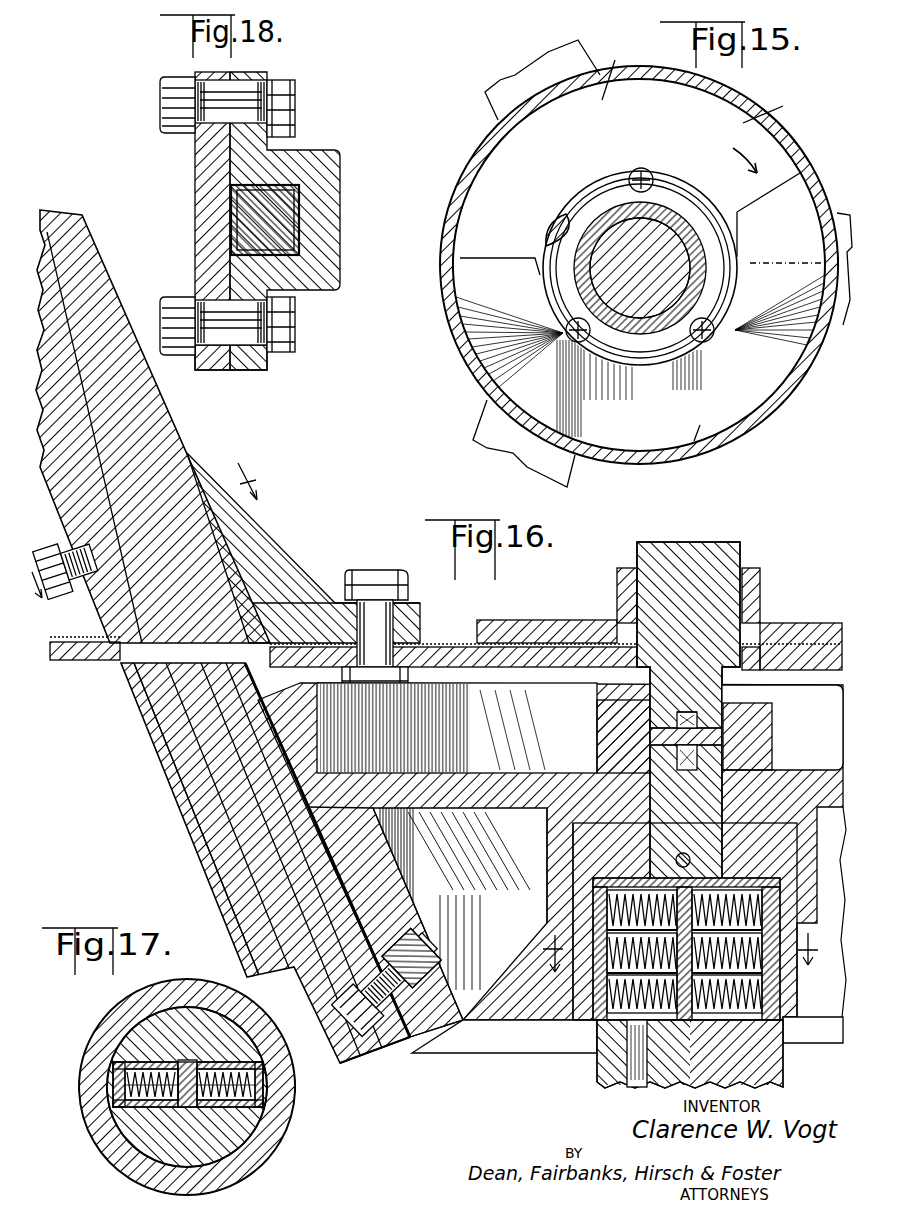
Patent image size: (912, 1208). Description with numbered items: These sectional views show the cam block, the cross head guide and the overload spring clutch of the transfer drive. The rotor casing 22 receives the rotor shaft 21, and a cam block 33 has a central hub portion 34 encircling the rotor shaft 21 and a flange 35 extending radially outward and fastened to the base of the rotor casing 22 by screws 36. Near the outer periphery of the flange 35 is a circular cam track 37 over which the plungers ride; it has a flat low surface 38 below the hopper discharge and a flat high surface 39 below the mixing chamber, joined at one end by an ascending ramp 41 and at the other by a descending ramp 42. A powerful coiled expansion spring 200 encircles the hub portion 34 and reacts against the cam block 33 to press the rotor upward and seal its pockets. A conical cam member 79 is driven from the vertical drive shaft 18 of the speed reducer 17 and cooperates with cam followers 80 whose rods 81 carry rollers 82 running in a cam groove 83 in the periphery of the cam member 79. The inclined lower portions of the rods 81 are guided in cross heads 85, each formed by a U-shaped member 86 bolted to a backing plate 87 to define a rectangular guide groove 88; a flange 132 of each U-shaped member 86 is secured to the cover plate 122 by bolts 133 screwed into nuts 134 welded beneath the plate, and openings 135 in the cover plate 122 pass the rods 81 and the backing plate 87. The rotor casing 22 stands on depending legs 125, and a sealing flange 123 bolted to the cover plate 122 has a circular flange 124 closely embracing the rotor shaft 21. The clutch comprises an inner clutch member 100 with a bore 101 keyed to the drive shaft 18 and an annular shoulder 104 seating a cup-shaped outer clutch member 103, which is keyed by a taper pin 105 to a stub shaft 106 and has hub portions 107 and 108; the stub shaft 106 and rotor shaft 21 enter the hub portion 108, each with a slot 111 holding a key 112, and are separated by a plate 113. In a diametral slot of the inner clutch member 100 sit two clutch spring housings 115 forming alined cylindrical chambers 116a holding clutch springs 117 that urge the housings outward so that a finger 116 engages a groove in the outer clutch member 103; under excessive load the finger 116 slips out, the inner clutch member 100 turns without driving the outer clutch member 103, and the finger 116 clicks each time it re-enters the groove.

In FIG. 16, the speed reducer 17 is at (683, 951).
In FIG. 16, the drive shaft 18 is at (662, 1085).
In FIG. 15, the rotor shaft 21 is at (610, 233).
In FIG. 16, the rotor shaft 21 is at (698, 556).
In FIG. 15, the rotor casing 22 is at (463, 178).
In FIG. 15, the cam block 33 is at (660, 427).
In FIG. 15, the hub portion 34 is at (680, 218).
In FIG. 15, the flange 35 is at (774, 109).
In FIG. 15, the screws 36 is at (641, 167).
In FIG. 15, the cam track 37 is at (694, 441).
In FIG. 15, the flat low surface 38 is at (616, 67).
In FIG. 15, the flat high surface 39 is at (772, 390).
In FIG. 15, the ascending ramp 41 is at (800, 197).
In FIG. 15, the descending ramp 42 is at (462, 304).
In FIG. 16, the conical cam member 79 is at (385, 878).
In FIG. 16, the cam followers 80 is at (368, 1042).
In FIG. 18, the follower rods 81 is at (280, 214).
In FIG. 16, the follower rods 81 is at (200, 740).
In FIG. 16, the rollers 82 is at (430, 1033).
In FIG. 16, the cam groove 83 is at (410, 936).
In FIG. 18, the cross heads 85 is at (322, 276).
In FIG. 16, the cross heads 85 is at (160, 418).
In FIG. 18, the U-shaped member 86 is at (255, 360).
In FIG. 16, the U-shaped member 86 is at (230, 565).
In FIG. 18, the backing plate 87 is at (197, 207).
In FIG. 16, the backing plate 87 is at (67, 477).
In FIG. 18, the guide groove 88 is at (300, 200).
In FIG. 16, the guide groove 88 is at (233, 833).
In FIG. 16, the inner clutch member 100 is at (775, 1083).
In FIG. 17, the inner clutch member 100 is at (225, 1145).
In FIG. 16, the bore 101 is at (713, 835).
In FIG. 16, the outer clutch member 103 is at (583, 985).
In FIG. 17, the outer clutch member 103 is at (108, 1076).
In FIG. 16, the annular shoulder 104 is at (600, 1057).
In FIG. 16, the taper pin 105 is at (770, 782).
In FIG. 16, the stub shaft 106 is at (768, 750).
In FIG. 16, the hub portion 107 is at (547, 845).
In FIG. 16, the hub portion 108 is at (612, 723).
In FIG. 16, the slot 111 is at (697, 712).
In FIG. 16, the key 112 is at (677, 718).
In FIG. 16, the plate 113 is at (655, 738).
In FIG. 16, the clutch spring housings 115 is at (600, 883).
In FIG. 17, the clutch spring housings 115 is at (125, 1105).
In FIG. 16, the finger 116 is at (764, 972).
In FIG. 17, the finger 116 is at (265, 1090).
In FIG. 16, the alined cylindrical chambers 116a is at (684, 926).
In FIG. 17, the alined cylindrical chambers 116a is at (190, 1065).
In FIG. 16, the clutch spring 117 is at (612, 905).
In FIG. 17, the clutch spring 117 is at (262, 1075).
In FIG. 16, the cover plate 122 is at (518, 657).
In FIG. 16, the sealing flange 123 is at (800, 625).
In FIG. 16, the circular flange 124 is at (762, 574).
In FIG. 15, the depending legs 125 is at (502, 100).
In FIG. 16, the flange 132 is at (302, 625).
In FIG. 16, the bolts 133 is at (372, 571).
In FIG. 16, the nuts 134 is at (396, 660).
In FIG. 16, the openings 135 is at (105, 662).
In FIG. 15, the coiled expansion spring 200 is at (547, 250).